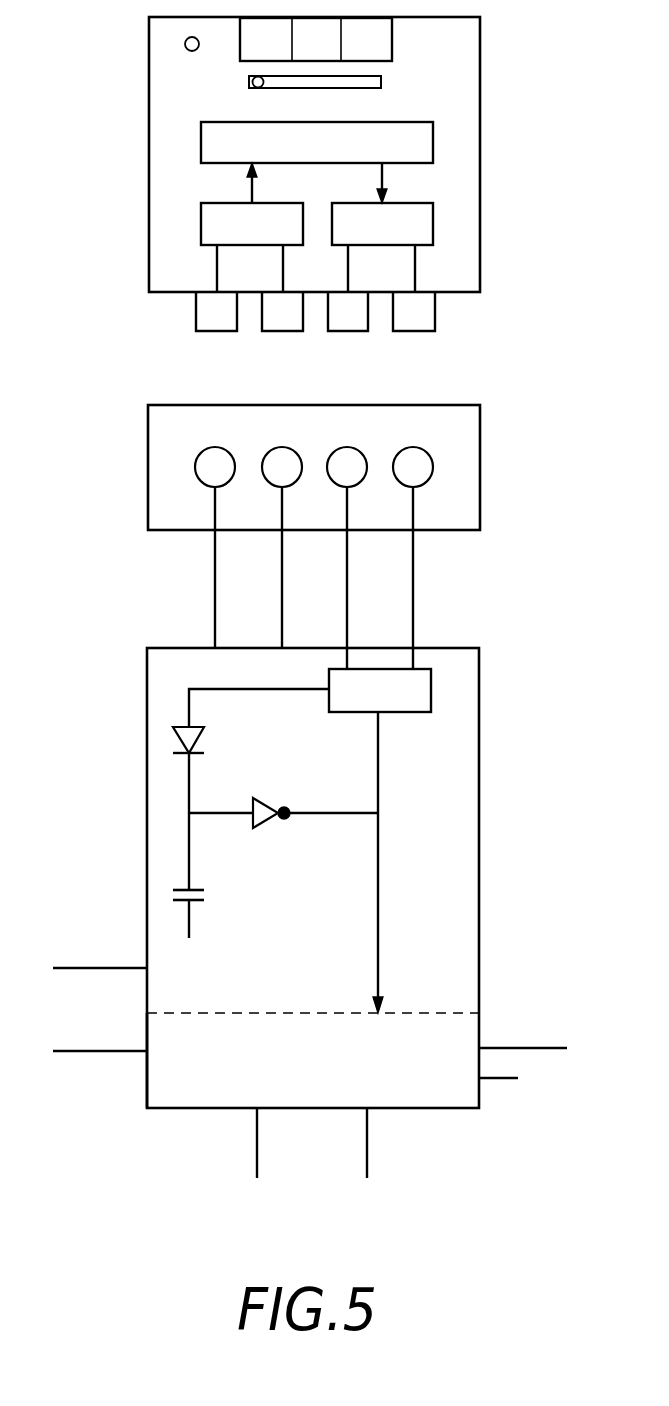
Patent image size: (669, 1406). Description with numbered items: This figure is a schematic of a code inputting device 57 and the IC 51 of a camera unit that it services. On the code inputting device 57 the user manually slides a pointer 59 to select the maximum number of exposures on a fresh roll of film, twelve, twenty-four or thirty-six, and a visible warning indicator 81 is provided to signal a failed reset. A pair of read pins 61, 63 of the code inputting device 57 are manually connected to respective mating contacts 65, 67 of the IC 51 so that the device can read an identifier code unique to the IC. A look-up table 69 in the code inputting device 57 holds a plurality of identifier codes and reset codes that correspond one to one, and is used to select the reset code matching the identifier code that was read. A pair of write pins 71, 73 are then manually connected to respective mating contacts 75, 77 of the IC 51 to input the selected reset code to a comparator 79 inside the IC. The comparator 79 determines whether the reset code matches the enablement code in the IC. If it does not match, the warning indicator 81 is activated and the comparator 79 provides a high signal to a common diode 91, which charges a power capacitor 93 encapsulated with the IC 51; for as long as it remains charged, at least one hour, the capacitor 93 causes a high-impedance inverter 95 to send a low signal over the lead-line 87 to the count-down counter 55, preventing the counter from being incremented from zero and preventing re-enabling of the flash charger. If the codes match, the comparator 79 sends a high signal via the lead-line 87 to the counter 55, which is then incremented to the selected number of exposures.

The code inputting device 57 is at (149, 122).
The visible warning indicator 81 is at (185, 45).
The pointer 59 is at (253, 84).
The look-up table 69 is at (434, 138).
The read pin 61 is at (205, 333).
The read pin 63 is at (283, 335).
The write pin 71 is at (348, 335).
The write pin 73 is at (410, 335).
The mating contact 65 is at (214, 447).
The mating contact 67 is at (281, 447).
The mating contact 75 is at (347, 447).
The mating contact 77 is at (413, 447).
The IC 51 is at (147, 703).
The comparator 79 is at (431, 690).
The diode 91 is at (173, 738).
The high-impedance inverter 95 is at (252, 803).
The power capacitor 93 is at (173, 890).
The lead-line 87 is at (378, 768).
The count-down counter 55 is at (170, 1065).